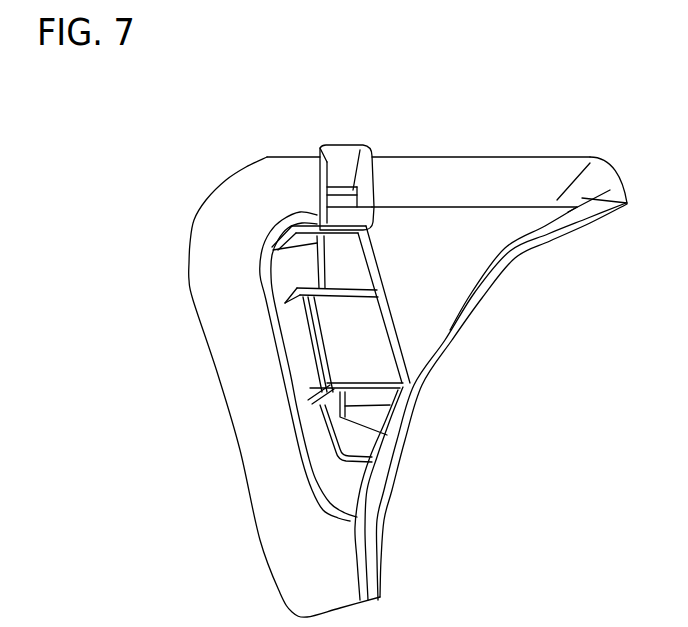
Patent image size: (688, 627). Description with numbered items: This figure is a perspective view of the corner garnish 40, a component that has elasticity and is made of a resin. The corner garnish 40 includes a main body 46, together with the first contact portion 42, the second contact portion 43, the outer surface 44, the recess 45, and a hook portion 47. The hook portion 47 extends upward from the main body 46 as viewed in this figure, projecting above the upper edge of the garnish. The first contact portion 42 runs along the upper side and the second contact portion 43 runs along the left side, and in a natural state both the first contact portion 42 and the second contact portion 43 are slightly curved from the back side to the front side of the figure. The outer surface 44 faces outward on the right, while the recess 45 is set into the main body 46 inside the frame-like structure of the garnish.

The corner garnish 40 is at (190, 136).
The first contact portion 42 is at (461, 149).
The second contact portion 43 is at (233, 380).
The outer surface 44 is at (460, 279).
The recess 45 is at (378, 337).
The main body 46 is at (276, 268).
The hook portion 47 is at (336, 160).